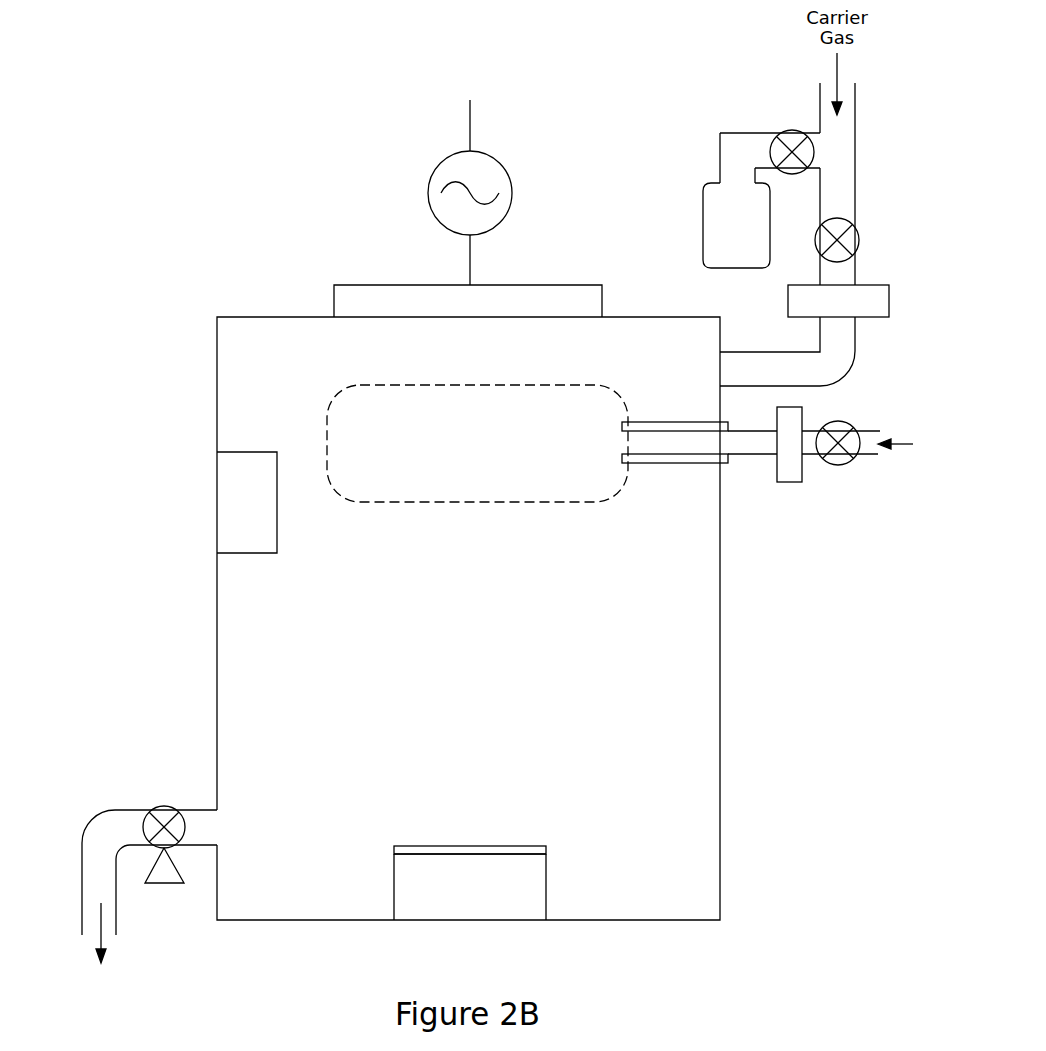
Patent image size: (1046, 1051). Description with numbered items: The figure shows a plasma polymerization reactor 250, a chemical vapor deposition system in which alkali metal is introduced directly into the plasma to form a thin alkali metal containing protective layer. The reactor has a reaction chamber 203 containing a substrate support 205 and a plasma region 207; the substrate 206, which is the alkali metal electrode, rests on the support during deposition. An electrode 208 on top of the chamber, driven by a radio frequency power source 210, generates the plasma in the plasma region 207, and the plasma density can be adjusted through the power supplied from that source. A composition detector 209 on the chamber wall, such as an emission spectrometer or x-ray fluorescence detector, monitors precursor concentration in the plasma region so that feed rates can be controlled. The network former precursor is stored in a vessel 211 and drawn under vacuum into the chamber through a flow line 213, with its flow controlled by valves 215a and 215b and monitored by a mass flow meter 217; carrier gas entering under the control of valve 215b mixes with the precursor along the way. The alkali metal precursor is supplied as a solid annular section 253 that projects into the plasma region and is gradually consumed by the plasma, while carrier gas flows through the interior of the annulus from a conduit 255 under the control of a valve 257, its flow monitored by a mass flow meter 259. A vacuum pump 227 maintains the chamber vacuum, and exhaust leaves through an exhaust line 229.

The plasma polymerization reactor 250 is at (238, 204).
The reaction chamber 203 is at (228, 620).
The substrate support 205 is at (453, 898).
The substrate 206 is at (478, 848).
The plasma region 207 is at (466, 456).
The electrode 208 is at (375, 283).
The composition detector 209 is at (230, 512).
The radio frequency power source 210 is at (447, 157).
The vessel 211 is at (720, 239).
The flow line 213 is at (832, 367).
The valve 215a is at (790, 135).
The valve 215b is at (837, 225).
The mass flow meter 217 is at (862, 297).
The vacuum pump 227 is at (165, 815).
The exhaust line 229 is at (107, 837).
The annular section 253 is at (650, 424).
The conduit 255 is at (866, 436).
The valve 257 is at (840, 463).
The mass flow meter 259 is at (788, 470).